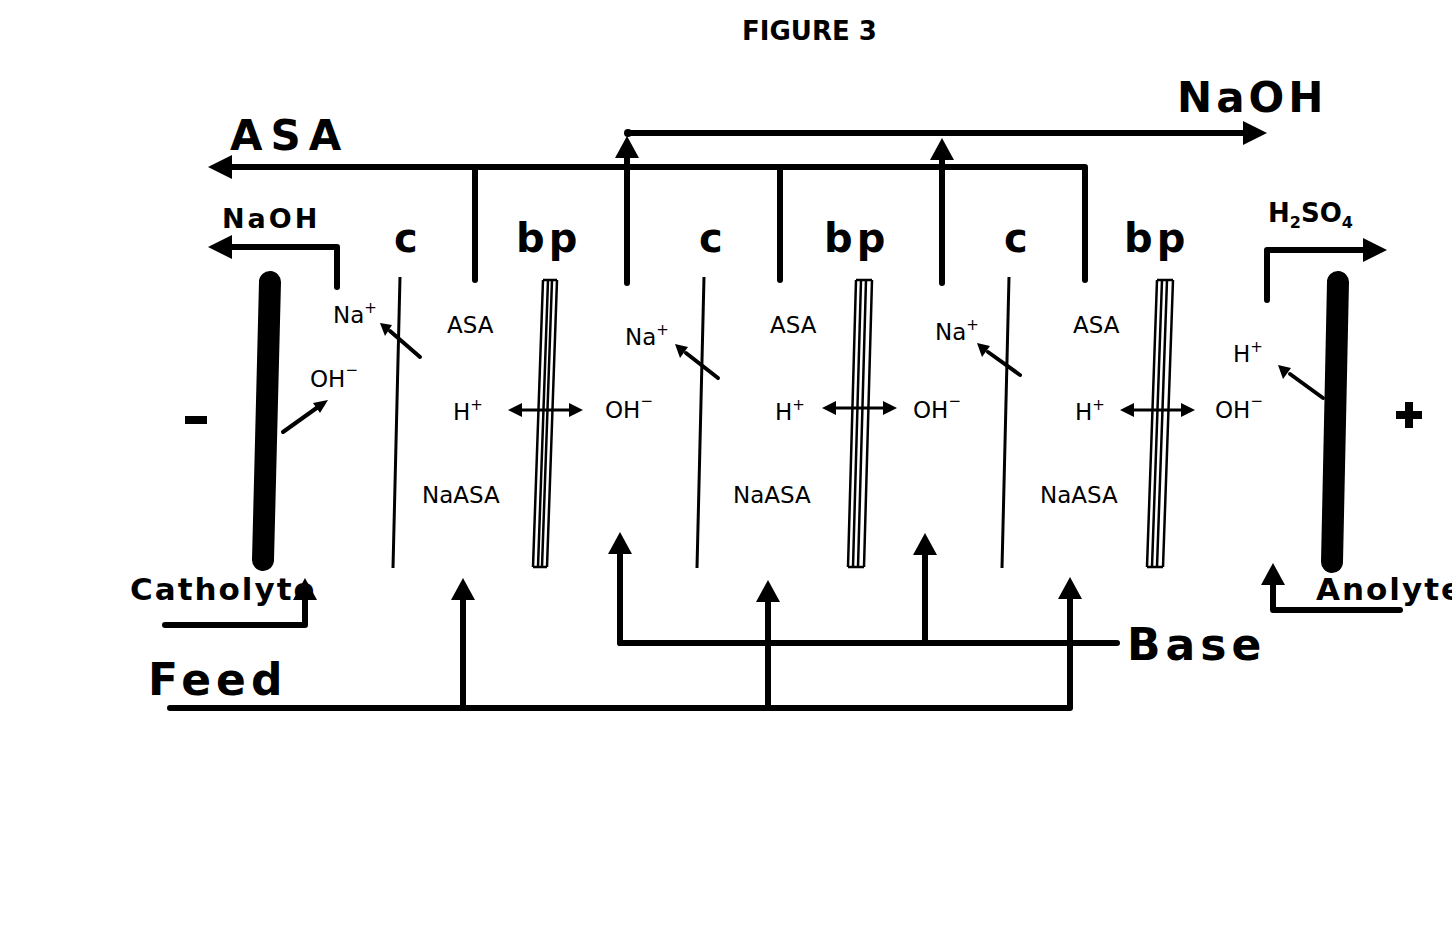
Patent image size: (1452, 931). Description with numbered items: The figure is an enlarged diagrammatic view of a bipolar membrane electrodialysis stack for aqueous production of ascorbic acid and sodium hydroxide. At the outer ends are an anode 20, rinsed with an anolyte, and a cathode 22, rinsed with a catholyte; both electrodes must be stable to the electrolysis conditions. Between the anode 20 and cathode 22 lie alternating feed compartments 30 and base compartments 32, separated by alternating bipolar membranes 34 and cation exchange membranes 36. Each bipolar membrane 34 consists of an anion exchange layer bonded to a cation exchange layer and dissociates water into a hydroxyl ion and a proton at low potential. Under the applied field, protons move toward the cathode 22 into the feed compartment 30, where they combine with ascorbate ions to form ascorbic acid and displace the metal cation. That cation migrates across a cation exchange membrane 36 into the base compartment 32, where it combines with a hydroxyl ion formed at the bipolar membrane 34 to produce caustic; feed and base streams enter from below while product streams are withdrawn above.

The anode 20 is at (1350, 347).
The cathode 22 is at (254, 353).
The feed compartment 30 is at (457, 673).
The base compartment 32 is at (628, 602).
The bipolar membrane 34 is at (555, 487).
The cation exchange membrane 36 is at (390, 502).